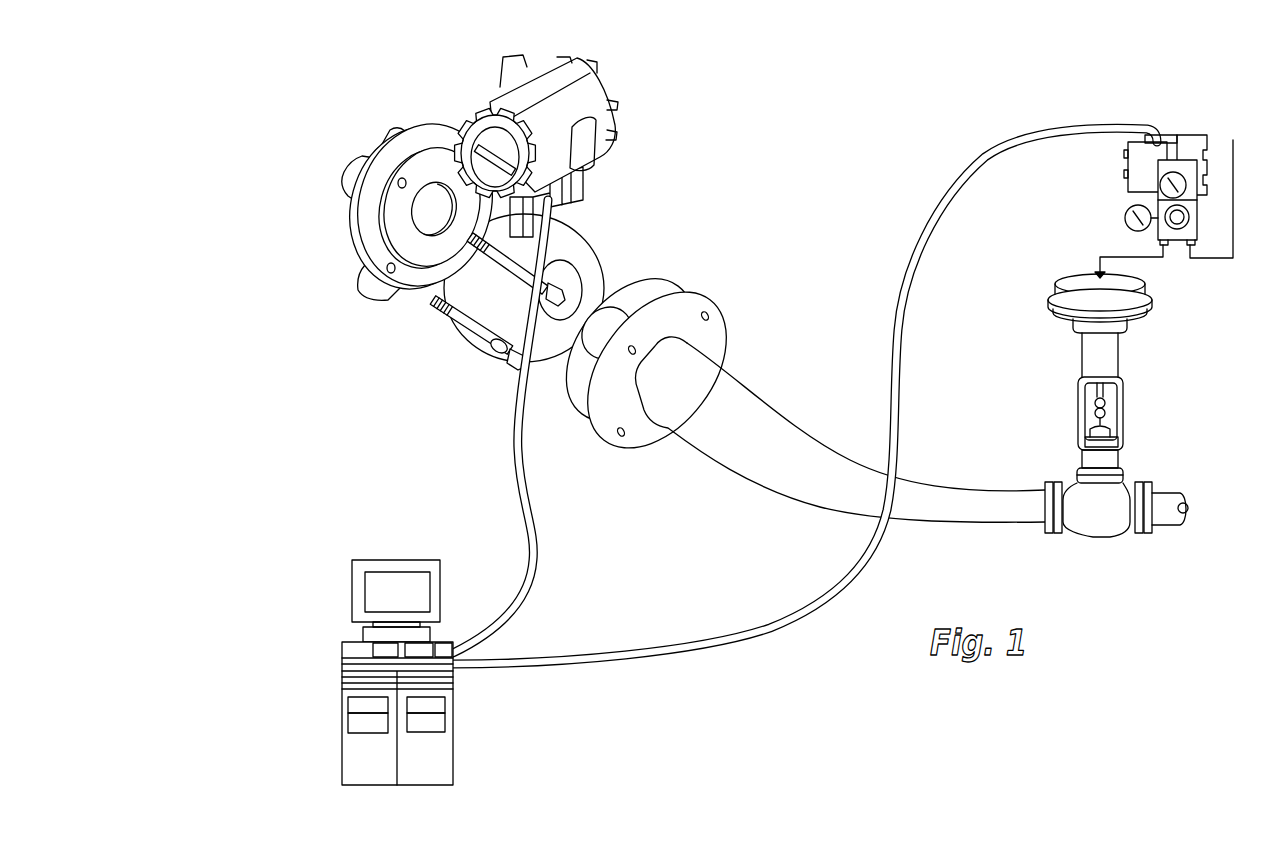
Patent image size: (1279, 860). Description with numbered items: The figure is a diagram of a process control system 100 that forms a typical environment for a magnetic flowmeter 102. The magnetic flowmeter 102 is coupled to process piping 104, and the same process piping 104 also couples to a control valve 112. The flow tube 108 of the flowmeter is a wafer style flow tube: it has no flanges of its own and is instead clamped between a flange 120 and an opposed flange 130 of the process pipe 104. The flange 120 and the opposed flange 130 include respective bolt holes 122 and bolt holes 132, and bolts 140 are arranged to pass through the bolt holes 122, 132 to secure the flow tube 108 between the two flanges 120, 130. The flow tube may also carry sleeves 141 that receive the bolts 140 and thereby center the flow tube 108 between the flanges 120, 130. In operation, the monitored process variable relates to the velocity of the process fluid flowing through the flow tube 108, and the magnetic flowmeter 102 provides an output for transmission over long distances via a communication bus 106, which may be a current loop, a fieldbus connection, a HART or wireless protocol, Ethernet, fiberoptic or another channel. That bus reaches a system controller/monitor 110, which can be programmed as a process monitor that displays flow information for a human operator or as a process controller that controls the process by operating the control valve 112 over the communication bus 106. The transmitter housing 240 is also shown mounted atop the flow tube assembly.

The process control system environment 100 is at (759, 224).
The magnetic flowmeter 102 is at (622, 283).
The process piping 104 is at (797, 485).
The communication bus 106 is at (530, 503).
The flow tube 108 is at (578, 247).
The system controller/monitor 110 is at (466, 697).
The control valve 112 is at (1124, 363).
The flange 120 is at (360, 246).
The bolt holes 122 is at (398, 182).
The opposed flange 130 is at (718, 302).
The bolt holes 132 is at (630, 354).
The bolts 140 is at (516, 365).
The sleeves 141 is at (483, 337).
The transmitter housing 240 is at (605, 95).